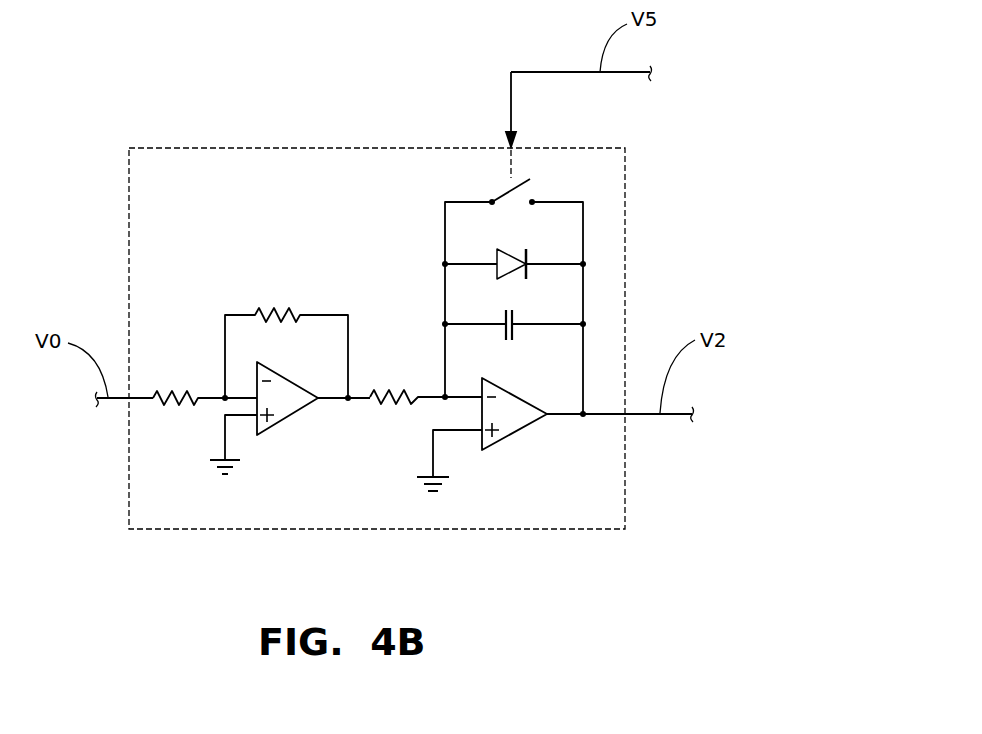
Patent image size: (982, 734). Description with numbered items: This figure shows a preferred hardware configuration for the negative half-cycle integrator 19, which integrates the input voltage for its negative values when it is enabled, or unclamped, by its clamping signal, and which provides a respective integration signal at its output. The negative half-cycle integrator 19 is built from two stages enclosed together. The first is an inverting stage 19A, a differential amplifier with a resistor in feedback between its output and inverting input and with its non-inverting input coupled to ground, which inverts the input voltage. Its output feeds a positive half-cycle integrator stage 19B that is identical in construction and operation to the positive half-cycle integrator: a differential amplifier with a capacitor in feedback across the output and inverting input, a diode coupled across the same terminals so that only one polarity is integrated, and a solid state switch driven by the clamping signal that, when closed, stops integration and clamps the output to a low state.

The negative half-cycle integrator 19 is at (305, 126).
The inverting stage 19A is at (263, 284).
The positive half-cycle integrator stage 19B is at (422, 285).